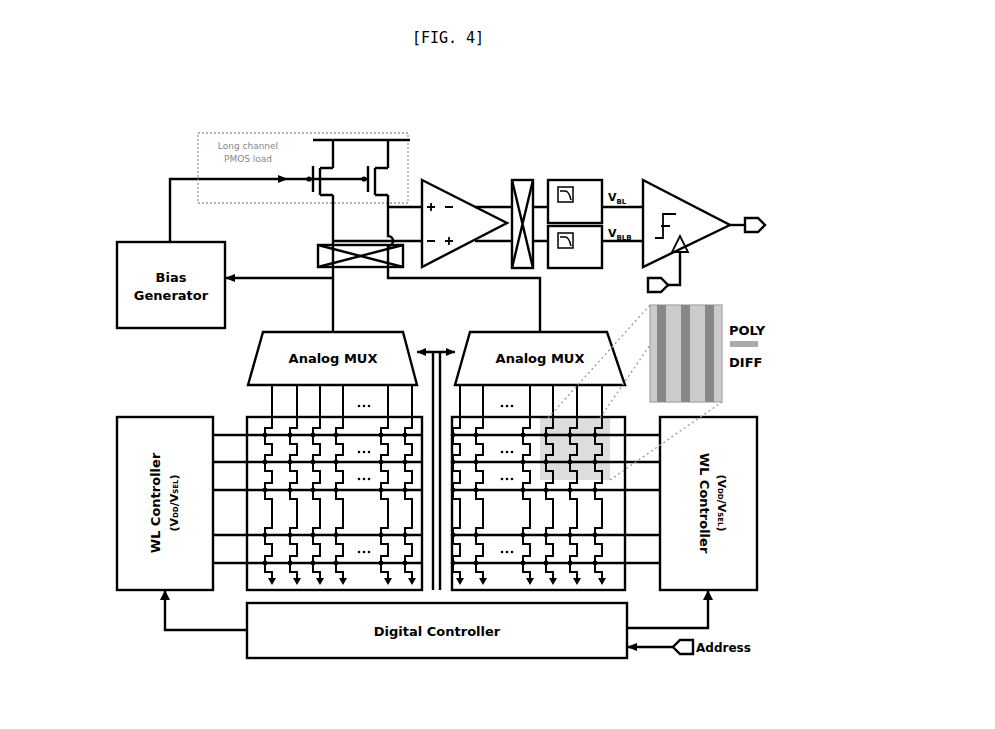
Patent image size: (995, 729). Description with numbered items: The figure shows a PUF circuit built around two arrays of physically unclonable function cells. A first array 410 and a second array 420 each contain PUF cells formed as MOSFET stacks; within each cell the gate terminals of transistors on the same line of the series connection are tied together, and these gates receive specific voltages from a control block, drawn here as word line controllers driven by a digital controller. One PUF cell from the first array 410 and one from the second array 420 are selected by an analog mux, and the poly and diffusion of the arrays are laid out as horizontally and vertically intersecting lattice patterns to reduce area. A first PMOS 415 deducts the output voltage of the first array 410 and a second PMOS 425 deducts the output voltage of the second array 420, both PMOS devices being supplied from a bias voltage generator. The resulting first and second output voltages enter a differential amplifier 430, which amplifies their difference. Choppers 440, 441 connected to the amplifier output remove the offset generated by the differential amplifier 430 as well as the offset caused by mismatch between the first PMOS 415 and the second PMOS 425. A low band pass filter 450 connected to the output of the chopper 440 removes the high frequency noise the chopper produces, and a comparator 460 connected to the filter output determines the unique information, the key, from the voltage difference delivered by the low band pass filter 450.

The first array 410 is at (307, 593).
The first PMOS 415 is at (313, 175).
The second array 420 is at (543, 592).
The second PMOS 425 is at (362, 158).
The differential amplifier 430 is at (442, 186).
The chopper 440 is at (516, 180).
The chopper 441 is at (372, 268).
The low band pass filter 450 is at (578, 180).
The comparator 460 is at (657, 181).